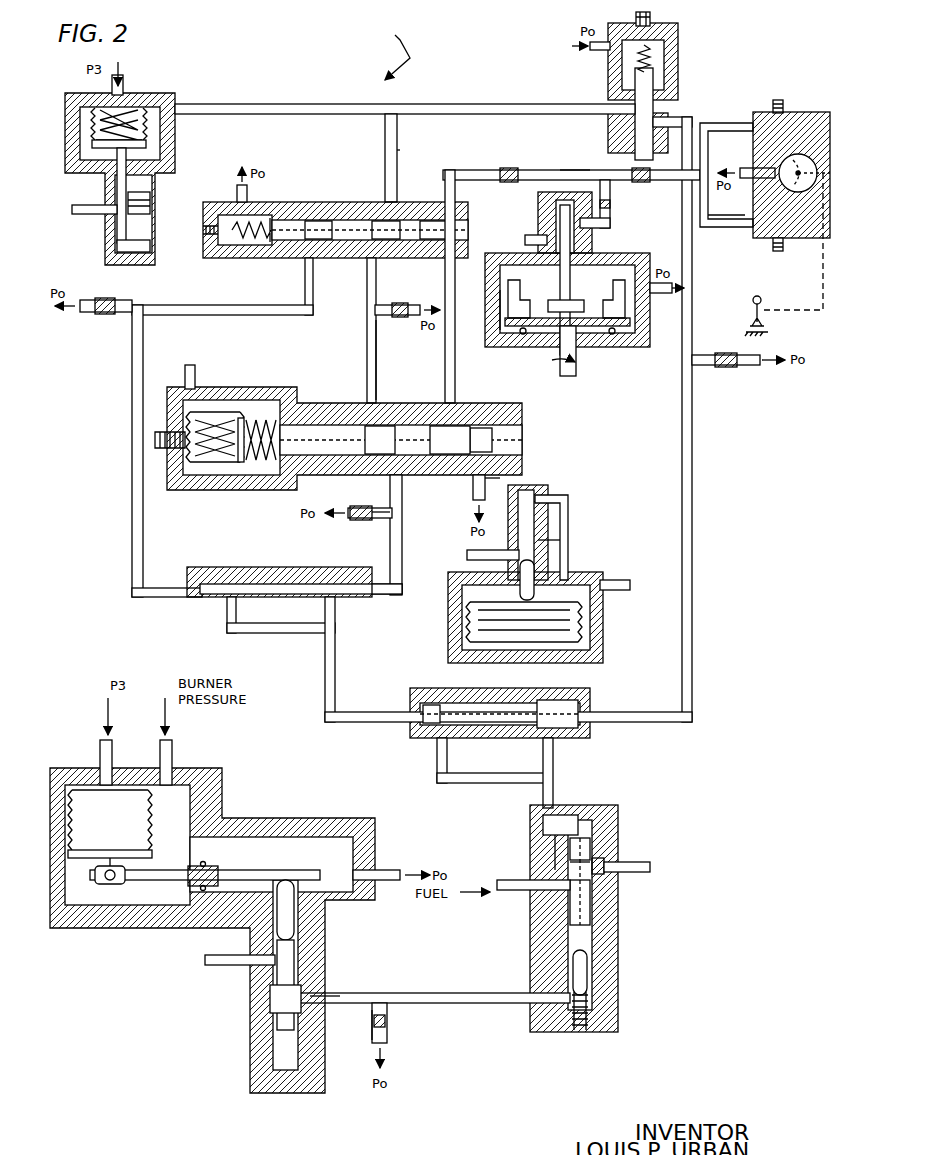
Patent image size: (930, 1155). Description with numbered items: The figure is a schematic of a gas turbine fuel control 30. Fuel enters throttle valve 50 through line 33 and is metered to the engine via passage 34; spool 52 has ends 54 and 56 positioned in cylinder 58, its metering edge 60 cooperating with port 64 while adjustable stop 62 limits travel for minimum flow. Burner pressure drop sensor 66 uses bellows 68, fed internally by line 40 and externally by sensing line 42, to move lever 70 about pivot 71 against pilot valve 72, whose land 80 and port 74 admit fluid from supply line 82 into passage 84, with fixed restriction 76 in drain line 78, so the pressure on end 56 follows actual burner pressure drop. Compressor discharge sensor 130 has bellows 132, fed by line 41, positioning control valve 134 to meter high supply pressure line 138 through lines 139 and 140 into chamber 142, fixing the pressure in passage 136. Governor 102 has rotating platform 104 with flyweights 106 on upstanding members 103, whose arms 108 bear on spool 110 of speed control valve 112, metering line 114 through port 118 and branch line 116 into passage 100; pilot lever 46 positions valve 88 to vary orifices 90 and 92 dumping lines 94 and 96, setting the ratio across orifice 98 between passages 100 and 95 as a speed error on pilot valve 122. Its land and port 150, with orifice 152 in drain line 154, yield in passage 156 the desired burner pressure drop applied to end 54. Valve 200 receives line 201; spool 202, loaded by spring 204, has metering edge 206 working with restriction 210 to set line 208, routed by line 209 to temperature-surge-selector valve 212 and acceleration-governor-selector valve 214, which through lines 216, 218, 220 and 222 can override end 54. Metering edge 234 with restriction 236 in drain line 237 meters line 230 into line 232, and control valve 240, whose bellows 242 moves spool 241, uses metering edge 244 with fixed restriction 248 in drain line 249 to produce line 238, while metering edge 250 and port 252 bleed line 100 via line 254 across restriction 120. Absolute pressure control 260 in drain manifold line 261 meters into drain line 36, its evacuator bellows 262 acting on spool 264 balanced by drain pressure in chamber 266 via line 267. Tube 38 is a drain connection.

The fuel control system 30 is at (403, 45).
The line 33 is at (508, 890).
The passage 34 is at (652, 864).
The drain line 36 is at (482, 540).
The inlet tube 38 is at (195, 372).
The line 40 is at (112, 752).
The line 41 is at (124, 84).
The sensing line 42 is at (172, 752).
The pilot lever 46 is at (753, 300).
The throttle valve 50 is at (640, 922).
The spool 52 is at (592, 878).
The end 54 is at (556, 838).
The end 56 is at (588, 965).
The cylinder 58 is at (585, 830).
The metering edge 60 is at (592, 868).
The adjustable stop 62 is at (582, 1030).
The port 64 is at (610, 858).
The burner pressure drop sensor 66 is at (230, 768).
The bellows 68 is at (155, 818).
The lever 70 is at (250, 870).
The pivot 71 is at (188, 892).
The pilot valve 72 is at (296, 893).
The port 74 is at (348, 992).
The fixed restriction 76 is at (388, 1028).
The drain line 78 is at (370, 1030).
The land 80 is at (270, 1040).
The supply line 82 is at (230, 968).
The passage 84 is at (470, 992).
The valve 88 is at (792, 241).
The orifice 90 is at (783, 112).
The orifice 92 is at (780, 250).
The line 94 is at (727, 124).
The passage 95 is at (655, 185).
The line 96 is at (712, 226).
The orifice 98 is at (625, 170).
The passage 100 is at (566, 168).
The governor 102 is at (552, 368).
The upstanding members 103 is at (500, 332).
The rotating platform 104 is at (585, 345).
The flyweights 106 is at (520, 300).
The arms 108 is at (615, 328).
The spool 110 is at (556, 215).
The speed control valve 112 is at (603, 255).
The line 114 is at (540, 236).
The branch line 116 is at (610, 226).
The port 118 is at (610, 212).
The restriction 120 is at (512, 186).
The pilot valve 122 is at (660, 95).
The compressor discharge sensor 130 is at (180, 90).
The bellows 132 is at (145, 116).
The control valve 134 is at (118, 190).
The passage 136 is at (437, 103).
The high supply pressure line 138 is at (92, 214).
The line 139 is at (148, 208).
The line 140 is at (150, 246).
The chamber 142 is at (155, 148).
The port 150 is at (672, 118).
The orifice 152 is at (728, 367).
The line 154 is at (697, 366).
The passage 156 is at (694, 493).
The valve 200 is at (347, 192).
The line 201 is at (383, 126).
The spool 202 is at (338, 260).
The spring 204 is at (240, 245).
The metering edge 206 is at (302, 262).
The line 208 is at (315, 315).
The line 209 is at (145, 328).
The restriction 210 is at (105, 312).
The temperature-surge-selector valve 212 is at (272, 556).
The acceleration-governor-selector valve 214 is at (535, 690).
The line 216 is at (250, 634).
The line 218 is at (336, 665).
The line 220 is at (470, 783).
The line 222 is at (554, 782).
The line 230 is at (398, 140).
The line 232 is at (400, 292).
The metering edge 234 is at (378, 262).
The restriction 236 is at (393, 318).
The drain line 237 is at (403, 318).
The line 238 is at (400, 598).
The control valve 240 is at (325, 390).
The spool 241 is at (493, 440).
The bellows 242 is at (230, 468).
The metering edge 244 is at (403, 500).
The fixed restriction 248 is at (375, 520).
The drain line 249 is at (362, 506).
The metering edge 250 is at (470, 452).
The port 252 is at (472, 488).
The line 254 is at (500, 480).
The absolute pressure control 260 is at (582, 555).
The drain manifold line 261 is at (610, 578).
The evacuator bellows 262 is at (582, 628).
The spool 264 is at (535, 575).
The chamber 266 is at (552, 500).
The line 267 is at (568, 516).